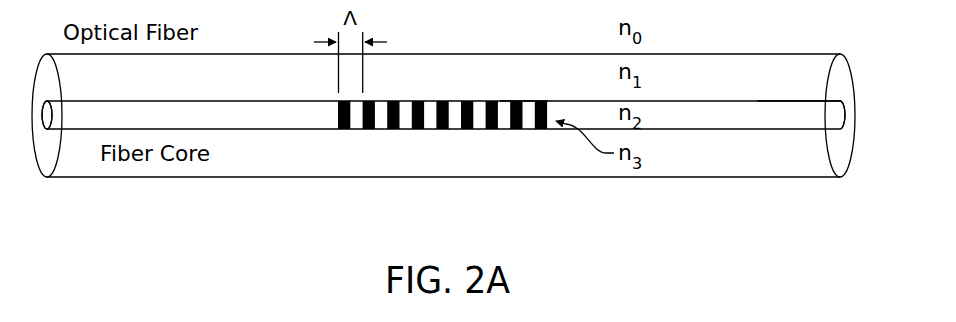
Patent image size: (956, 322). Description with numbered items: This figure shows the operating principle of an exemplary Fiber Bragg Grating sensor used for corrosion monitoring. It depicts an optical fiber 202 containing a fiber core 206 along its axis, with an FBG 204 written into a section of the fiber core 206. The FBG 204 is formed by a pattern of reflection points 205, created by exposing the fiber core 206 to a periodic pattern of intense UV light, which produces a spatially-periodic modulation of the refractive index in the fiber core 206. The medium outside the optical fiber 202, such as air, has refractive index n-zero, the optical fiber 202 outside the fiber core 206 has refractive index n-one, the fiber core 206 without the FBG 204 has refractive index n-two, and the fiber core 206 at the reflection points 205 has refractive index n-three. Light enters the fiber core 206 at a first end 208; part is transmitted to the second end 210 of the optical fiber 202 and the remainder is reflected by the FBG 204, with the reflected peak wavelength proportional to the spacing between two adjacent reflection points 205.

The optical fiber 202 is at (712, 63).
The FBG 204 is at (475, 142).
The reflection points 205 is at (517, 102).
The fiber core 206 is at (677, 117).
The first end 208 is at (68, 117).
The second end 210 is at (757, 117).